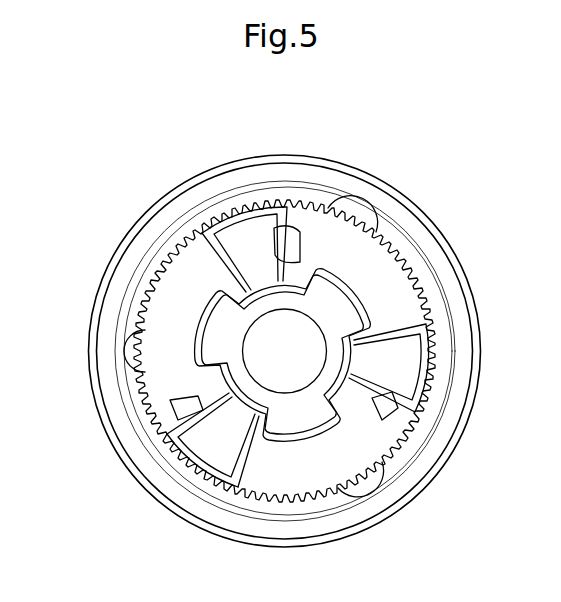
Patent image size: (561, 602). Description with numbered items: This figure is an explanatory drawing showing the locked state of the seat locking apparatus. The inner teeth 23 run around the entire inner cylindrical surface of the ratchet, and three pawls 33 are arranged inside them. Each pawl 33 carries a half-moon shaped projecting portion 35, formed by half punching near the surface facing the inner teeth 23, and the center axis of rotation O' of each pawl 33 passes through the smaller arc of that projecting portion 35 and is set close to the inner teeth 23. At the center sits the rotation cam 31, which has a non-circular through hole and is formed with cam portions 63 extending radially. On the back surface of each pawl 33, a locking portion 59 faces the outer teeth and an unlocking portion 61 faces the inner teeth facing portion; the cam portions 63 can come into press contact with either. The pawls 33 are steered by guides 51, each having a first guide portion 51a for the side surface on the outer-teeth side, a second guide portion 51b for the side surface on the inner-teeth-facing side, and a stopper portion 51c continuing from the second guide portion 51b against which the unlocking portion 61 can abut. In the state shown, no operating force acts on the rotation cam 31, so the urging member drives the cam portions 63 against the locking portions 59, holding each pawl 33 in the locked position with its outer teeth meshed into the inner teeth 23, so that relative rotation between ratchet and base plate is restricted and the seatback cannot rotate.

The inner teeth 23 is at (352, 500).
The rotation cam 31 is at (350, 390).
The pawl 33 is at (175, 305).
The projecting portion 35 is at (318, 226).
The guide 51 is at (146, 457).
The first guide portion 51a is at (240, 470).
The second guide portion 51b is at (212, 450).
The stopper portion 51c is at (210, 413).
The locking portion 59 is at (385, 340).
The unlocking portion 61 is at (298, 267).
The cam portion 63 is at (405, 393).
The center axis of rotation of the pawl O' is at (244, 362).